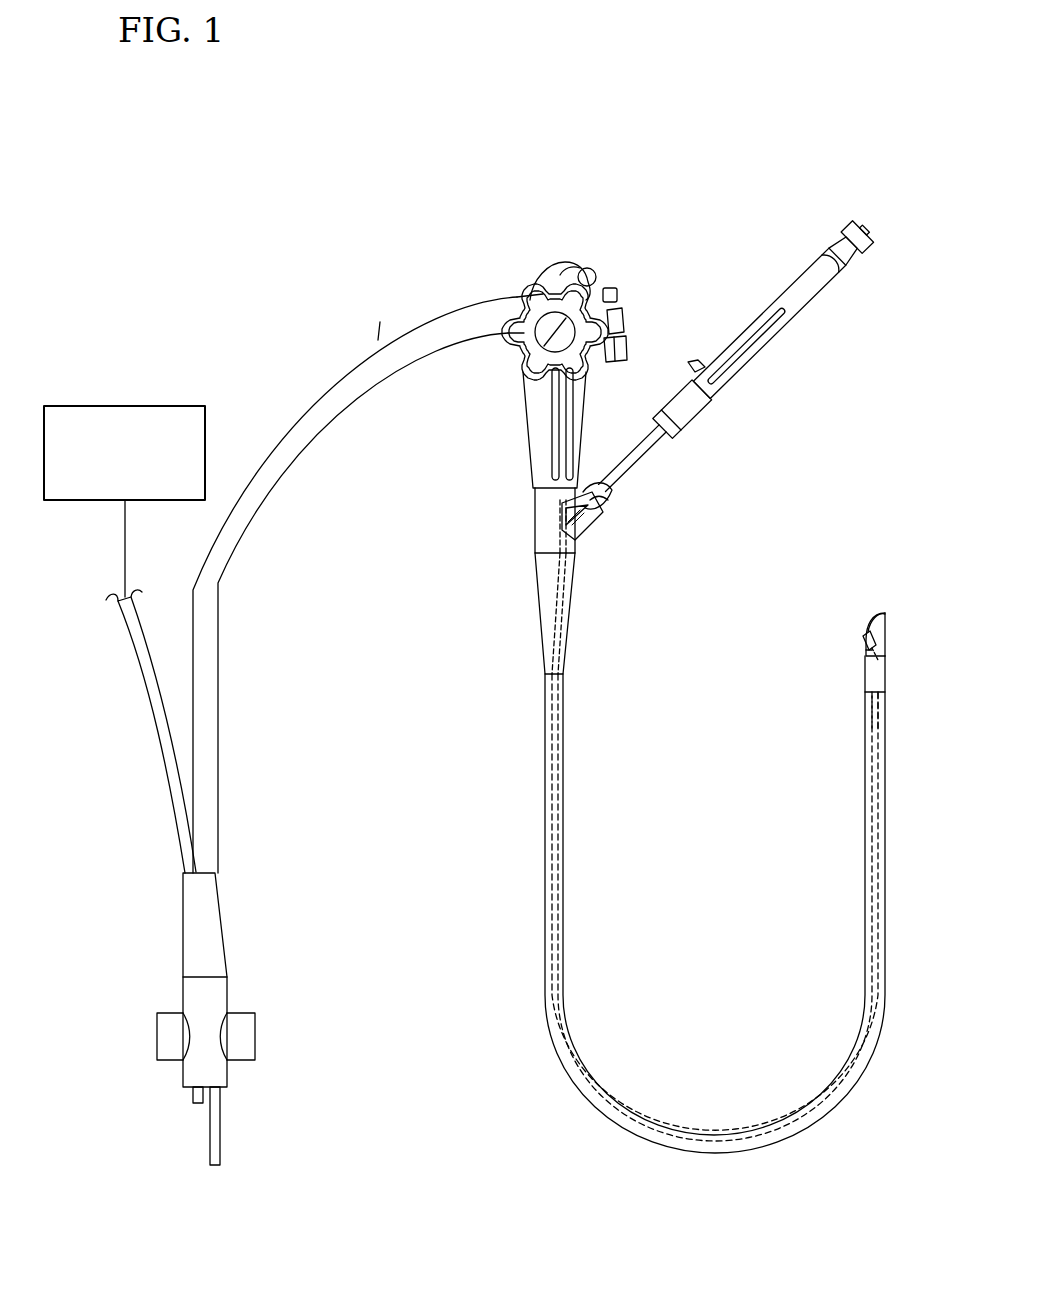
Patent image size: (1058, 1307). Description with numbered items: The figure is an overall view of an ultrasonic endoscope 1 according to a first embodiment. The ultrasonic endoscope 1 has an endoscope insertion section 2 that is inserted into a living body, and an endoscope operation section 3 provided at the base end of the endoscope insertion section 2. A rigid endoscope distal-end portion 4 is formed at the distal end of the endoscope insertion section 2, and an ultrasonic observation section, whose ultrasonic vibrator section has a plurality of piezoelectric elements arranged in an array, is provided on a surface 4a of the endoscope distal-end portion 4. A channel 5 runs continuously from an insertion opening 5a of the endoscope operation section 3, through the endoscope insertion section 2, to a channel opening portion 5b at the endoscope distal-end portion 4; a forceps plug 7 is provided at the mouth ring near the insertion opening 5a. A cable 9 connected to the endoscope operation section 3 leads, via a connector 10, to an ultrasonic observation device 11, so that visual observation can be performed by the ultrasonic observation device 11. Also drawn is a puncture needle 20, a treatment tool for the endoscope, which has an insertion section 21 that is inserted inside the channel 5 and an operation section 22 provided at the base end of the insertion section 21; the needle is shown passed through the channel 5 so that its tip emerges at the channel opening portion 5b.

The ultrasonic endoscope 1 is at (478, 188).
The endoscope insertion section 2 is at (543, 793).
The endoscope operation section 3 is at (548, 262).
The endoscope distal-end portion 4 is at (892, 630).
The surface of the endoscope distal-end portion 4a is at (866, 622).
The channel 5 is at (876, 727).
The insertion opening 5a is at (600, 518).
The channel opening portion 5b is at (868, 651).
The forceps plug 7 is at (602, 506).
The cable 9 is at (280, 437).
The connector 10 is at (214, 997).
The ultrasonic observation device 11 is at (155, 404).
The puncture needle 20 is at (790, 336).
The insertion section 21 is at (862, 640).
The operation section 22 is at (718, 385).